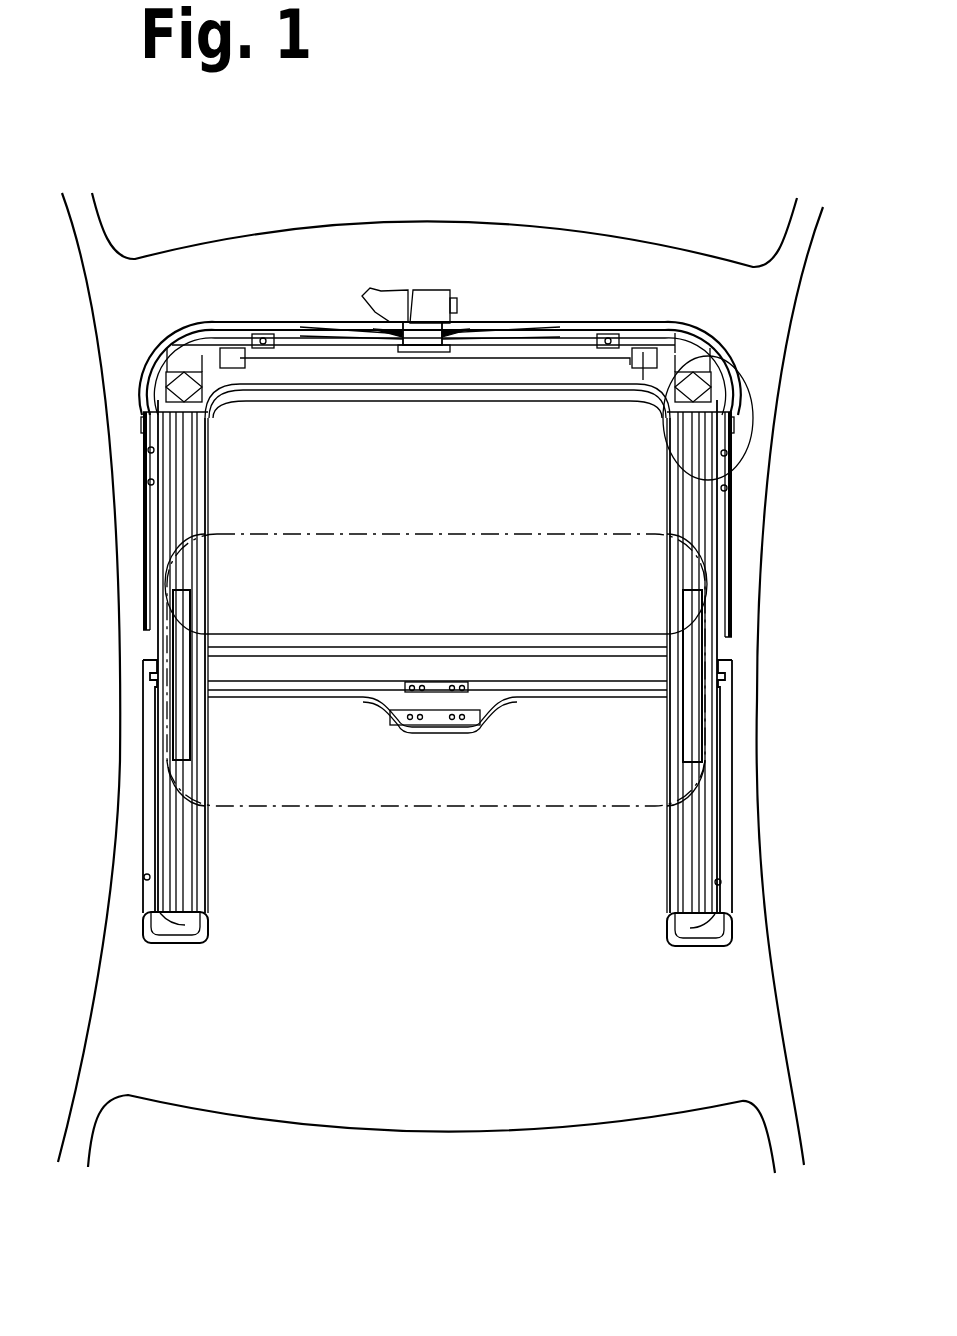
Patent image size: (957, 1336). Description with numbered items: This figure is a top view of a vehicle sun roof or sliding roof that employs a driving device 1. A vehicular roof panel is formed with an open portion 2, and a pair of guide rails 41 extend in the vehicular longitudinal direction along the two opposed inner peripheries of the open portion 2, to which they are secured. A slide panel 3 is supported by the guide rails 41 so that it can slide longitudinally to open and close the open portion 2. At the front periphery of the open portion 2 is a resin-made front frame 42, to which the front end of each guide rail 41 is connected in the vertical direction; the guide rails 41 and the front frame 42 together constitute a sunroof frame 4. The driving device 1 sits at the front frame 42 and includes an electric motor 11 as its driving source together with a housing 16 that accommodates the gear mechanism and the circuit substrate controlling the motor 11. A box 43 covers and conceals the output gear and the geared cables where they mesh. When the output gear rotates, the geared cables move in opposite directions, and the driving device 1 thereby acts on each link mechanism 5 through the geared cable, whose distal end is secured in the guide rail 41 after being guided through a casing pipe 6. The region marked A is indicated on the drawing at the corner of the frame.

The driving device 1 is at (478, 303).
The open portion 2 is at (205, 489).
The slide panel 3 is at (620, 536).
The sunroof frame 4 is at (146, 555).
The link mechanism 5 is at (180, 734).
The casing pipe 6 is at (242, 323).
The electric motor 11 is at (375, 292).
The housing 16 is at (445, 290).
The guide rail 41 is at (150, 609).
The front frame 42 is at (573, 347).
The box 43 is at (416, 333).
The detail portion A is at (748, 370).